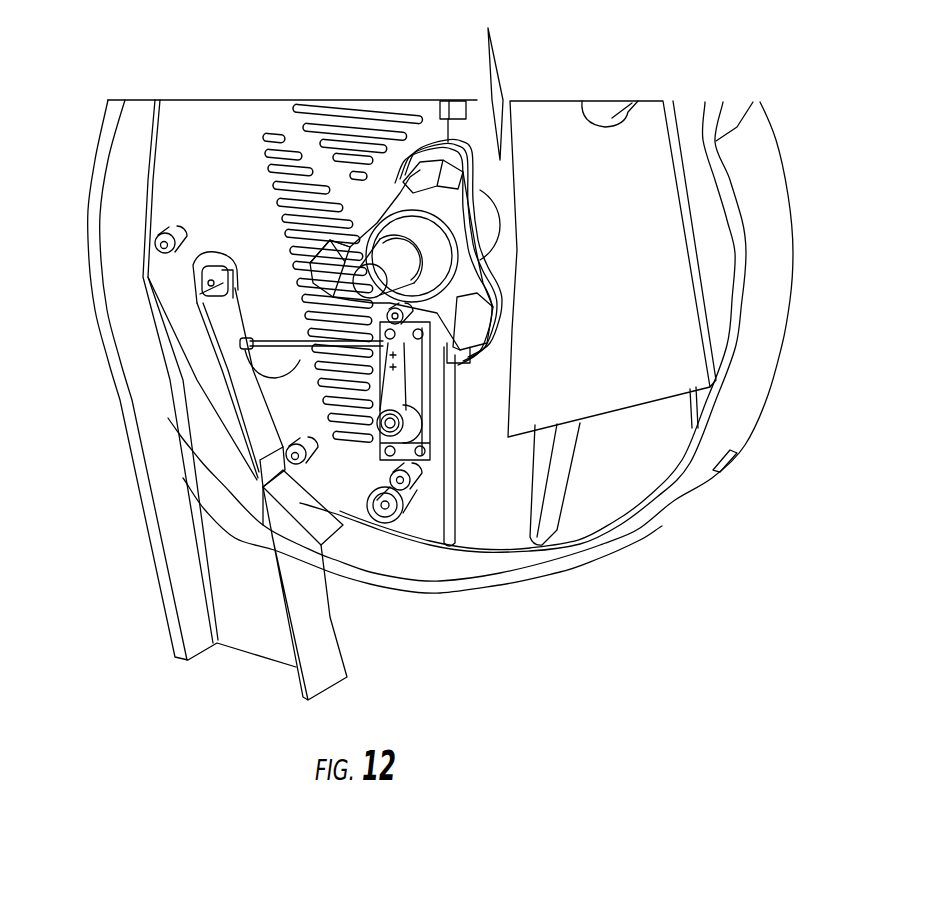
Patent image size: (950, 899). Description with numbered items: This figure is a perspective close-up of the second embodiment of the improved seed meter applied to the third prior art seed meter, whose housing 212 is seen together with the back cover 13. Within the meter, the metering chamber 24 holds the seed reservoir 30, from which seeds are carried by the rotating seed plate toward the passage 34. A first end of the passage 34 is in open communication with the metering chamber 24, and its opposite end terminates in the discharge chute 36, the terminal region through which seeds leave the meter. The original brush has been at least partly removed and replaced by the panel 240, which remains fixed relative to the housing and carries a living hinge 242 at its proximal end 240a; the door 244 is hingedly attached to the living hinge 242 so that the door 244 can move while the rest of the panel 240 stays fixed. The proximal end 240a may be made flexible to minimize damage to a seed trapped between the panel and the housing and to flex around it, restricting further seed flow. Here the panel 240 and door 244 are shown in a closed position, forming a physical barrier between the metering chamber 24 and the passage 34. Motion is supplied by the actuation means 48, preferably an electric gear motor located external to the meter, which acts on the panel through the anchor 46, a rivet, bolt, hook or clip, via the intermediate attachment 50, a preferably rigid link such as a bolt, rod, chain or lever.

The back cover 13 is at (469, 530).
The metering chamber 24 is at (147, 277).
The seed reservoir 30 is at (567, 518).
The passage 34 is at (177, 210).
The discharge chute 36 is at (230, 660).
The anchor 46 is at (230, 370).
The actuation means 48 is at (284, 448).
The intermediate attachment 50 is at (256, 406).
The housing 212 is at (497, 567).
The panel 240 is at (248, 418).
The proximal end 240a is at (197, 293).
The living hinge 242 is at (262, 487).
The door 244 is at (245, 343).